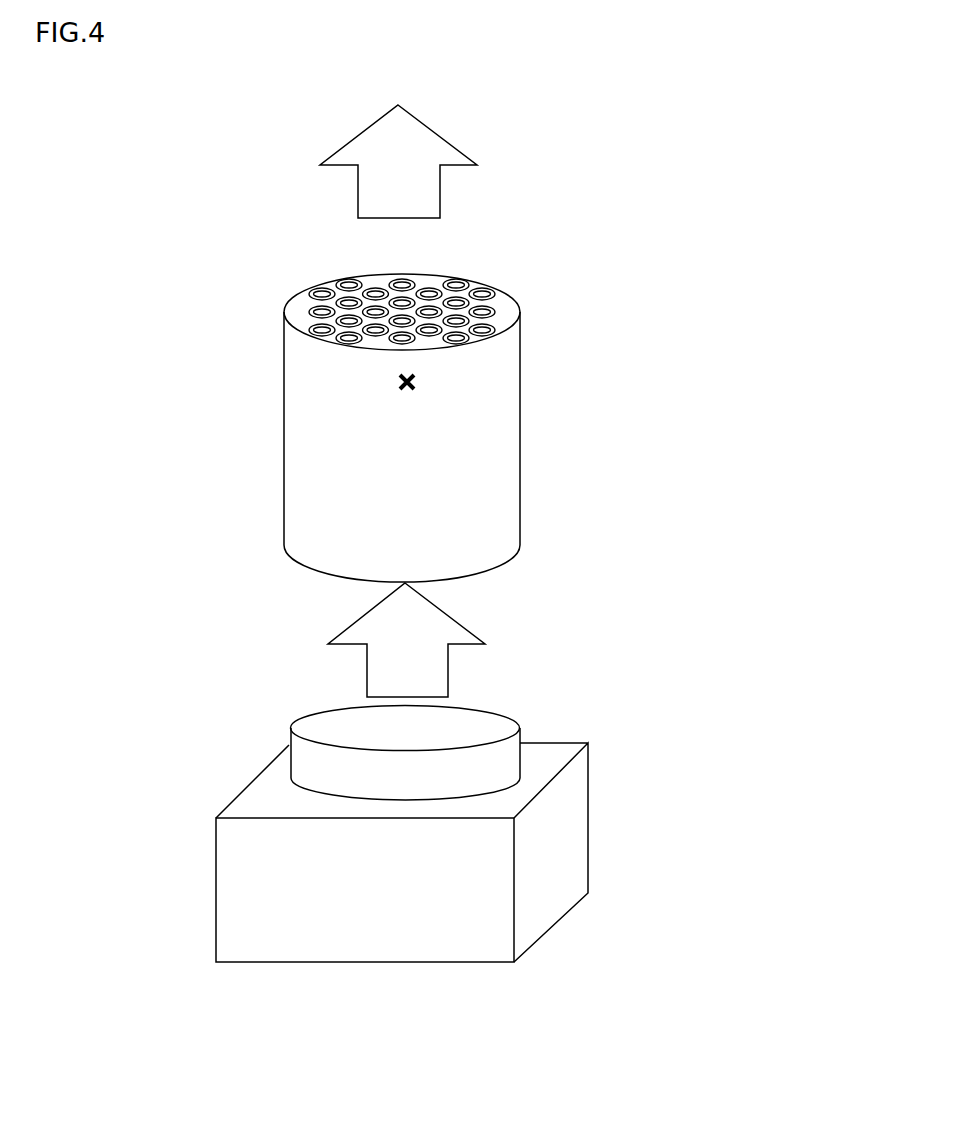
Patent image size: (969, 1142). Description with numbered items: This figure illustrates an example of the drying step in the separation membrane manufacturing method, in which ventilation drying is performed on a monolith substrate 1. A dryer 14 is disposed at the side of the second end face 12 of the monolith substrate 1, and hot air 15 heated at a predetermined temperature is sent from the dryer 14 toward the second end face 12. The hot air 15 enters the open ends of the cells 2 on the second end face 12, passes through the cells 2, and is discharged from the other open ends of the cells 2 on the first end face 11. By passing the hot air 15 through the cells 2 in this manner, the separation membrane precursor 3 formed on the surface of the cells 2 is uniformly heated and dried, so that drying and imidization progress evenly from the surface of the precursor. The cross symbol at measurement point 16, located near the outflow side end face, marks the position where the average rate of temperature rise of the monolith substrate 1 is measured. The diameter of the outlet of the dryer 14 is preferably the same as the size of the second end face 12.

The monolith substrate 1 is at (492, 435).
The cells 2 is at (483, 291).
The separation membrane precursor 3 is at (520, 311).
The first end face 11 is at (303, 278).
The second end face 12 is at (295, 563).
The dryer 14 is at (555, 825).
The hot air 15 is at (420, 201).
The measurement point 16 is at (423, 380).